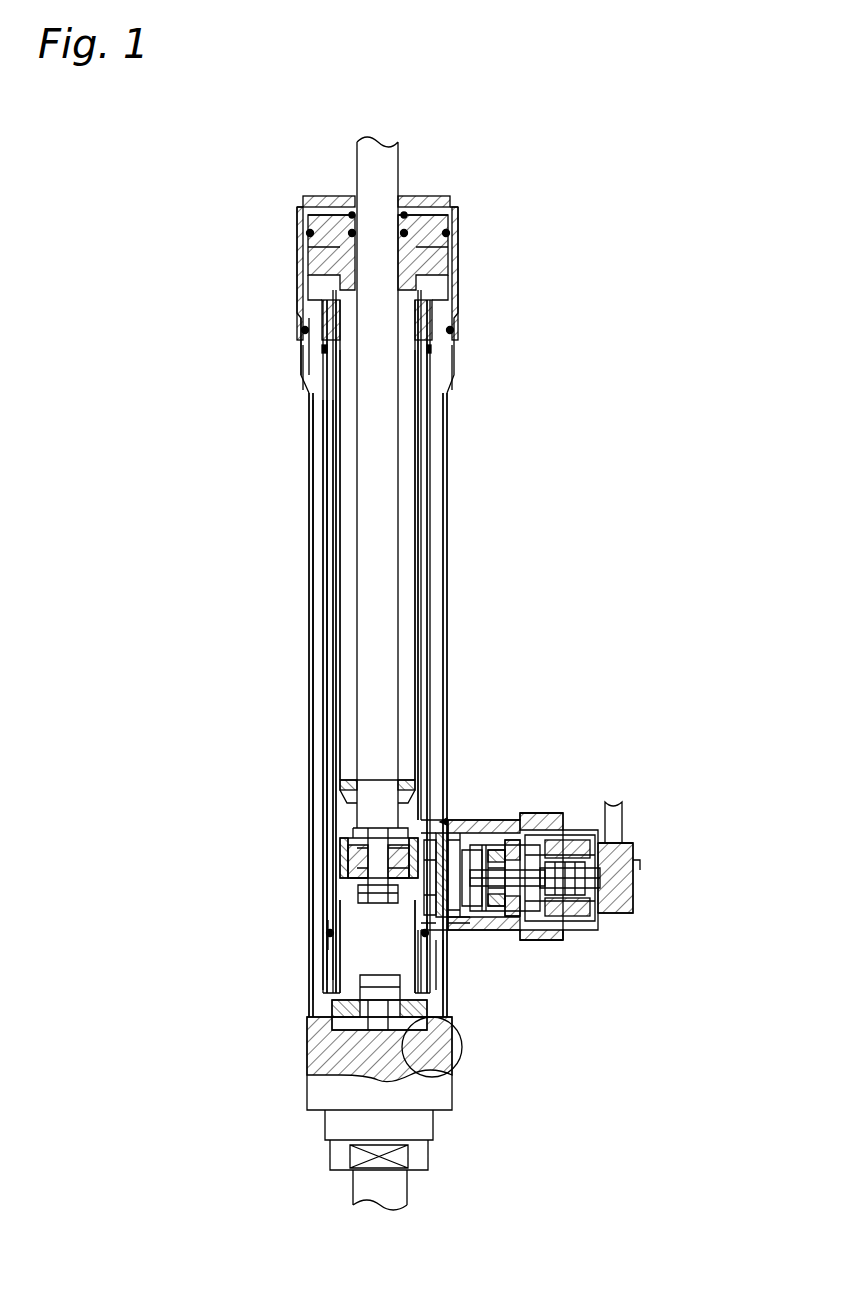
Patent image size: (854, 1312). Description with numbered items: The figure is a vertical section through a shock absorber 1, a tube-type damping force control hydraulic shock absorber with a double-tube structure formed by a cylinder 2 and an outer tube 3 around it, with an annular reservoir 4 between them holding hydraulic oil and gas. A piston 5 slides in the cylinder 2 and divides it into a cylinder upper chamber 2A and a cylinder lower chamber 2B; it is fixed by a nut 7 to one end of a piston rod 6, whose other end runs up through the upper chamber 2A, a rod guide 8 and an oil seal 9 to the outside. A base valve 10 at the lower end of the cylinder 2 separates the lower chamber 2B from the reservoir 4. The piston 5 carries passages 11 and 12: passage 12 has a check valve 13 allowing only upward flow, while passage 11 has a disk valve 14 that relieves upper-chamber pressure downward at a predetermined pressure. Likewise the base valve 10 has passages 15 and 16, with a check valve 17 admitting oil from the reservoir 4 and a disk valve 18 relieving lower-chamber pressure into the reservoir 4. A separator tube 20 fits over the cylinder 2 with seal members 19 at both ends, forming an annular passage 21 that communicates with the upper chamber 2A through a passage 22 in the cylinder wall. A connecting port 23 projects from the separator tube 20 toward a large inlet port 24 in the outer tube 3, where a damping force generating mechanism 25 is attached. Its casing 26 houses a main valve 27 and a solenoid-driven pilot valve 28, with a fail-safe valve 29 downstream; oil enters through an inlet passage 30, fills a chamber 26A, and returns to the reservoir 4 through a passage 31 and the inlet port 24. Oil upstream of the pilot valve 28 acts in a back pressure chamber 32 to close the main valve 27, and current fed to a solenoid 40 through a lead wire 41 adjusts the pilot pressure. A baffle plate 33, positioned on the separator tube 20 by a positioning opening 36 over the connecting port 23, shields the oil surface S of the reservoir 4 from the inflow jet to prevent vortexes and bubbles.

The shock absorber 1 is at (512, 245).
The cylinder 2 is at (418, 420).
The cylinder upper chamber 2A is at (343, 548).
The cylinder lower chamber 2B is at (380, 958).
The outer tube 3 is at (447, 478).
The reservoir 4 is at (318, 450).
The piston 5 is at (346, 866).
The piston rod 6 is at (355, 160).
The nut 7 is at (362, 897).
The rod guide 8 is at (318, 257).
The oil seal 9 is at (422, 205).
The base valve 10 is at (450, 1078).
The passage 11 is at (346, 853).
The passage 12 is at (447, 818).
The check valve 13 is at (460, 822).
The disk valve 14 is at (353, 890).
The passage 15 is at (323, 1033).
The passage 16 is at (440, 1052).
The check valve 17 is at (340, 993).
The disk valve 18 is at (433, 1112).
The seal members 19 is at (323, 330).
The separator tube 20 is at (332, 484).
The annular passage 21 is at (428, 443).
The passage 22 is at (424, 350).
The connecting port 23 is at (470, 822).
The inlet port 24 is at (452, 950).
The damping force generating mechanism 25 is at (563, 800).
The casing 26 is at (558, 815).
The chamber 26A is at (505, 822).
The main valve 27 is at (508, 936).
The pilot valve 28 is at (545, 938).
The fail-safe valve 29 is at (588, 939).
The inlet passage 30 is at (442, 956).
The passage 31 is at (495, 822).
The back pressure chamber 32 is at (500, 936).
The baffle plate 33 is at (482, 822).
The positioning opening 36 is at (466, 933).
The solenoid 40 is at (578, 830).
The lead wire 41 is at (624, 822).
The oil surface S is at (323, 730).